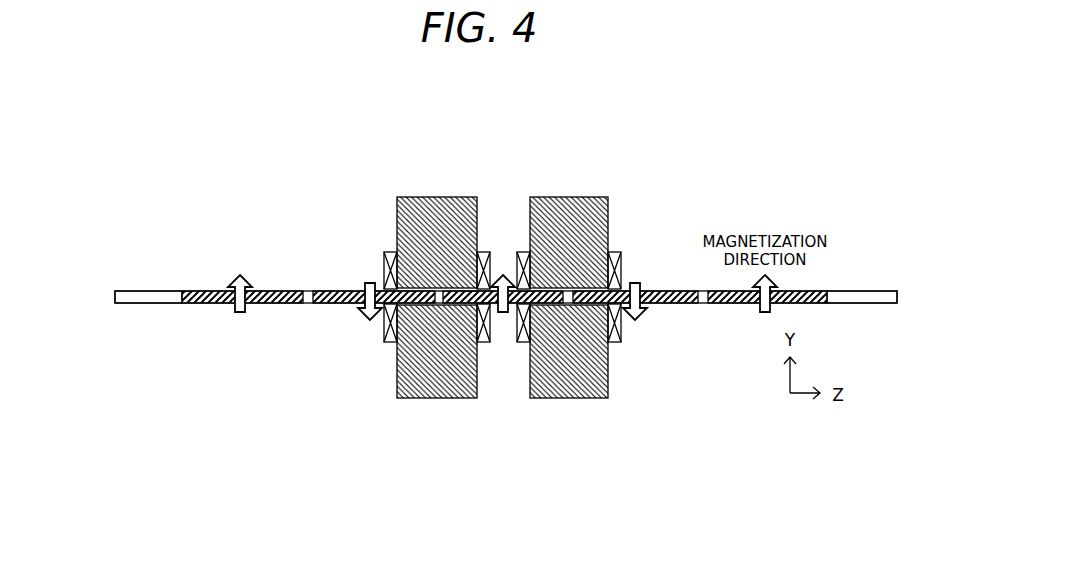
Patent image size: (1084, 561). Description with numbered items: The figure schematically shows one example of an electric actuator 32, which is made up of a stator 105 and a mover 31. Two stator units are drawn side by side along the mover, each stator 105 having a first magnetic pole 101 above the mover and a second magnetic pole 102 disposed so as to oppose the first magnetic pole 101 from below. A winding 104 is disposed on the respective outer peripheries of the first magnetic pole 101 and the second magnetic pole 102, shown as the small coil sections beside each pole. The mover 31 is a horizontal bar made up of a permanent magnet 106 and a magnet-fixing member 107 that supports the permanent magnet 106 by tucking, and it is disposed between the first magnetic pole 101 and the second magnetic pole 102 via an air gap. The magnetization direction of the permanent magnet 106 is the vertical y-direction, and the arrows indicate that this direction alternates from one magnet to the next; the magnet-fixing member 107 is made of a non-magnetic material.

The mover 31 is at (120, 212).
The electric actuator 32 is at (387, 457).
The first magnetic pole 101 is at (470, 198).
The second magnetic pole 102 is at (468, 398).
The winding 104 is at (386, 258).
The stator 105 is at (380, 138).
The permanent magnet 106 is at (205, 293).
The magnet-fixing member 107 is at (148, 297).